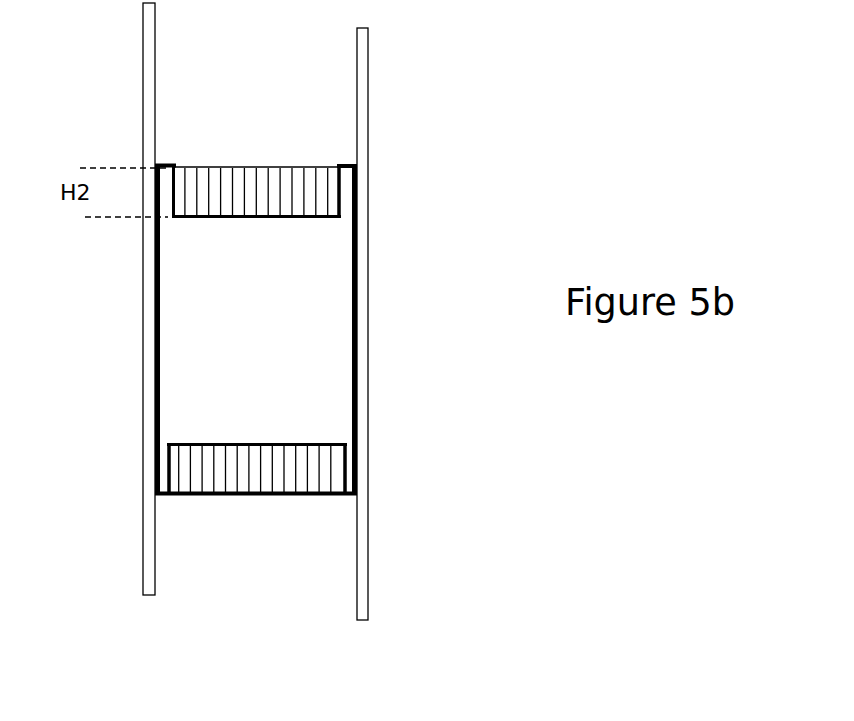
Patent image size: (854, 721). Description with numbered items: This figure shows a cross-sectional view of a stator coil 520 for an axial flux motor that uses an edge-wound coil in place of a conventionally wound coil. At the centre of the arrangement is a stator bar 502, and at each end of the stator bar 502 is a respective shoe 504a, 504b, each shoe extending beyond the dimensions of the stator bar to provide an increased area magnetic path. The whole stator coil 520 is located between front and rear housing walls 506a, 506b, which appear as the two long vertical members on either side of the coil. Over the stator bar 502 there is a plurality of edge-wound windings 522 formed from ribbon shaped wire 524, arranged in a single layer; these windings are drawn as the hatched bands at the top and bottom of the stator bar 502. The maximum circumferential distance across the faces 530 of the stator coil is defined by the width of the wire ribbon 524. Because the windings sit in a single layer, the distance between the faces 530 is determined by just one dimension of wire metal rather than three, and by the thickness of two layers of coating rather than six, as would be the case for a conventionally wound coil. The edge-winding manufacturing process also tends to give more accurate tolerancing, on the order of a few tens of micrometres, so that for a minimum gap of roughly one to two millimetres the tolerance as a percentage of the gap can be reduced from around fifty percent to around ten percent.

The stator bar 502 is at (268, 338).
The shoe 504a is at (158, 479).
The shoe 504b is at (346, 193).
The front housing wall 506a is at (152, 63).
The rear housing wall 506b is at (362, 68).
The stator coil 520 is at (232, 574).
The edge-wound windings 522 is at (192, 165).
The ribbon shaped wire 524 is at (273, 190).
The faces of the stator coil 530 is at (229, 156).